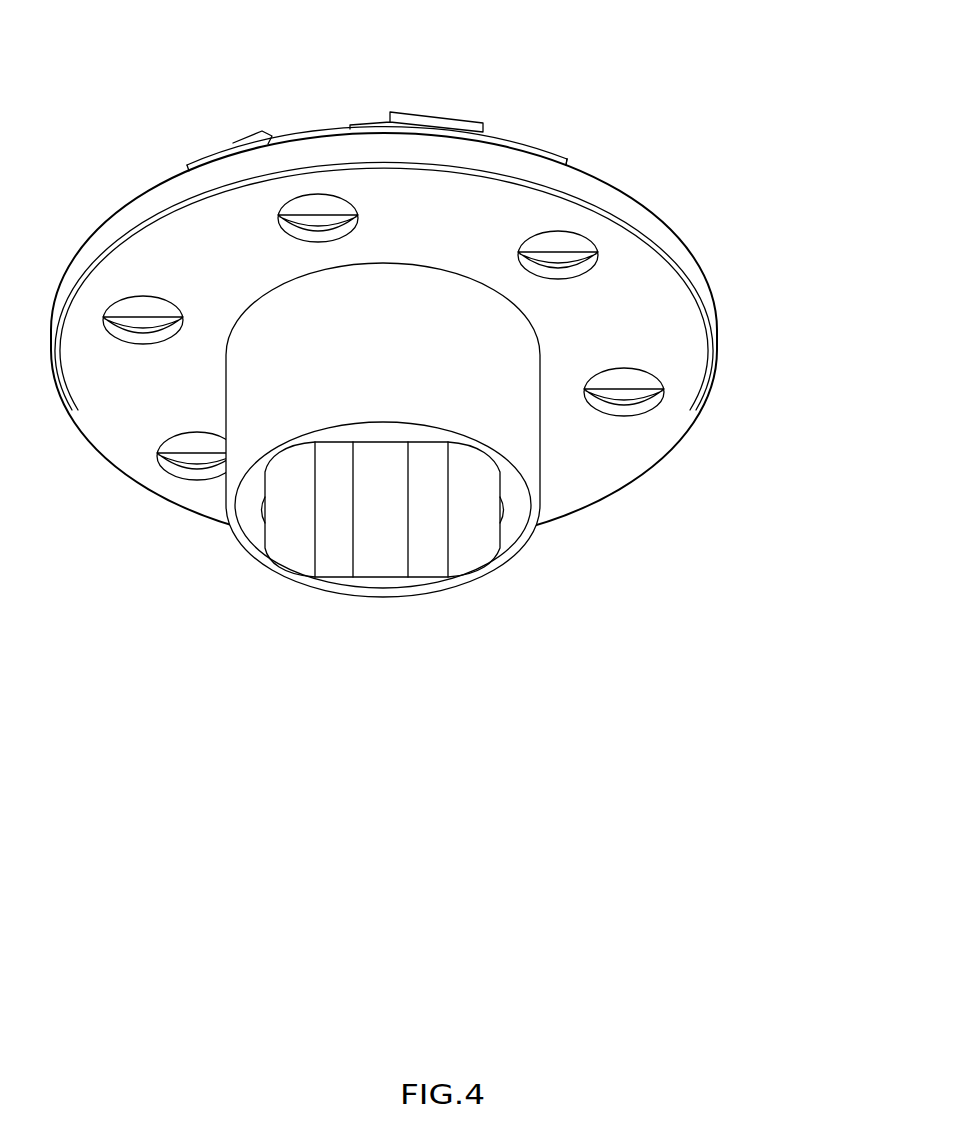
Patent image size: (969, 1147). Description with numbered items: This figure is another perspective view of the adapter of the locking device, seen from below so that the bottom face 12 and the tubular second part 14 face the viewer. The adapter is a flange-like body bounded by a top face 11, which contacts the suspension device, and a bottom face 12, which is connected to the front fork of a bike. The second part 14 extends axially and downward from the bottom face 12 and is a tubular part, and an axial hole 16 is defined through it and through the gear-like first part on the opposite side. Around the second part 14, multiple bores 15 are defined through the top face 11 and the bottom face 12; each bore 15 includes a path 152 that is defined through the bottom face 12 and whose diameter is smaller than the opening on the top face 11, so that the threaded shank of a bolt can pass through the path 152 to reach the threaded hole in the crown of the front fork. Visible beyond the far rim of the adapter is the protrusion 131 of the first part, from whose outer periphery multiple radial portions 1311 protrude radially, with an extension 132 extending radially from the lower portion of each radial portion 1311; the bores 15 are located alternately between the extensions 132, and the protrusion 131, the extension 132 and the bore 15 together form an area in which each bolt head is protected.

The top face 11 is at (637, 197).
The bottom face 12 is at (449, 279).
The protrusion 131 is at (381, 91).
The radial portion 1311 is at (434, 110).
The extension 132 is at (510, 133).
The second part 14 is at (439, 462).
The bore 15 is at (439, 363).
The path 152 is at (644, 406).
The axial hole 16 is at (468, 527).